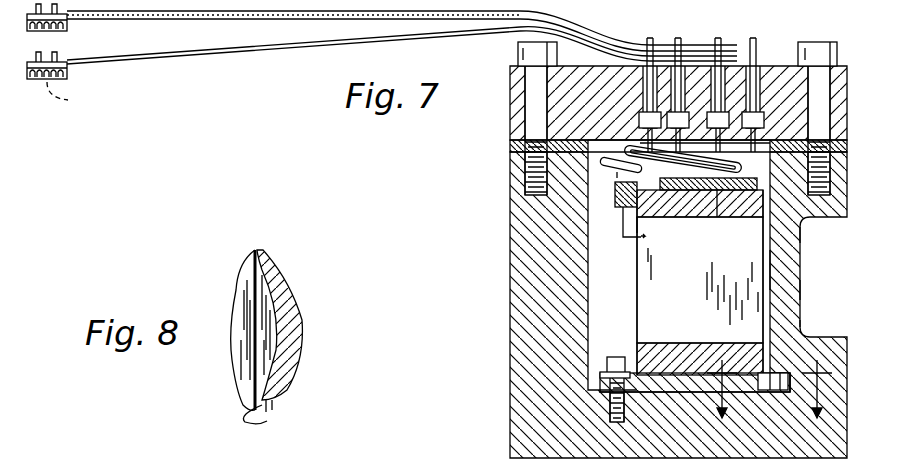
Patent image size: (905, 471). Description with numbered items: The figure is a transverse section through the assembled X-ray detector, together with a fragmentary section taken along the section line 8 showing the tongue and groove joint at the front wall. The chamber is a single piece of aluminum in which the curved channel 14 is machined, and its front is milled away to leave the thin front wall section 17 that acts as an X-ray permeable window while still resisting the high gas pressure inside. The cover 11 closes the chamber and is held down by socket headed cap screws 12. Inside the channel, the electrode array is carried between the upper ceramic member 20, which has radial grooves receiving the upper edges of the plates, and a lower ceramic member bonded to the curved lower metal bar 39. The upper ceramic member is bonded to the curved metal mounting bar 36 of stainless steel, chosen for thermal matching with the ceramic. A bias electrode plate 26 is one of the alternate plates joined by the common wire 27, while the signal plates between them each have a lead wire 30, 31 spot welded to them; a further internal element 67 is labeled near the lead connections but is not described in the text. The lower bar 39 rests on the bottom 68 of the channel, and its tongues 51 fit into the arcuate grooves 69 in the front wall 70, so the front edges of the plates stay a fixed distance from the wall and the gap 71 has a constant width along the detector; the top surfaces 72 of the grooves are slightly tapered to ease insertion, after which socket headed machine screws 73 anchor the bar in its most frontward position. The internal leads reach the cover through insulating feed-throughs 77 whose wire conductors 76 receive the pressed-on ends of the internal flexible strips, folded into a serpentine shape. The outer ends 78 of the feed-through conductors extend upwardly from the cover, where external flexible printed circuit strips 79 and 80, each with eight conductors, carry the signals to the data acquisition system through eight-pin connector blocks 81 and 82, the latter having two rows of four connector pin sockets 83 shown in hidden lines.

In FIG. 7, the section line 8 is at (734, 378).
In FIG. 7, the cover 11 is at (835, 103).
In FIG. 7, the socket headed cap screws 12 is at (520, 50).
In FIG. 7, the curved channel 14 is at (603, 288).
In FIG. 7, the thin front wall section 17 is at (802, 288).
In FIG. 7, the upper member 20 is at (778, 207).
In FIG. 7, the bias electrode plate 26 is at (696, 287).
In FIG. 7, the common wire 27 is at (641, 326).
In FIG. 7, the lead wire 30 is at (700, 197).
In FIG. 7, the lead wire 31 is at (615, 224).
In FIG. 7, the curved metal mounting bar 36 is at (722, 195).
In FIG. 7, the curved lower metal bar 39 is at (667, 387).
In FIG. 8, the curved lower metal bar 39 is at (232, 372).
In FIG. 7, the tongues 51 is at (770, 378).
In FIG. 8, the tongues 51 is at (272, 312).
In FIG. 7, the lead wire 67 is at (618, 176).
In FIG. 7, the bottom of the curved channel 68 is at (692, 393).
In FIG. 7, the arcuate grooves 69 is at (790, 392).
In FIG. 8, the arcuate grooves 69 is at (276, 374).
In FIG. 7, the front wall 70 is at (805, 272).
In FIG. 8, the front wall 70 is at (287, 417).
In FIG. 7, the gap 71 is at (795, 242).
In FIG. 7, the top surfaces of the grooves 72 is at (775, 372).
In FIG. 7, the socket headed machine screws 73 is at (605, 366).
In FIG. 7, the wire conductors 76 is at (635, 136).
In FIG. 7, the insulating feed-throughs 77 is at (648, 90).
In FIG. 7, the outer ends of the conductors 78 is at (650, 40).
In FIG. 7, the flexible printed circuit strip 79 is at (133, 13).
In FIG. 7, the flexible printed circuit strip 80 is at (236, 47).
In FIG. 7, the connector block 81 is at (45, 31).
In FIG. 7, the connector block 82 is at (67, 72).
In FIG. 7, the connector pin sockets 83 is at (70, 97).